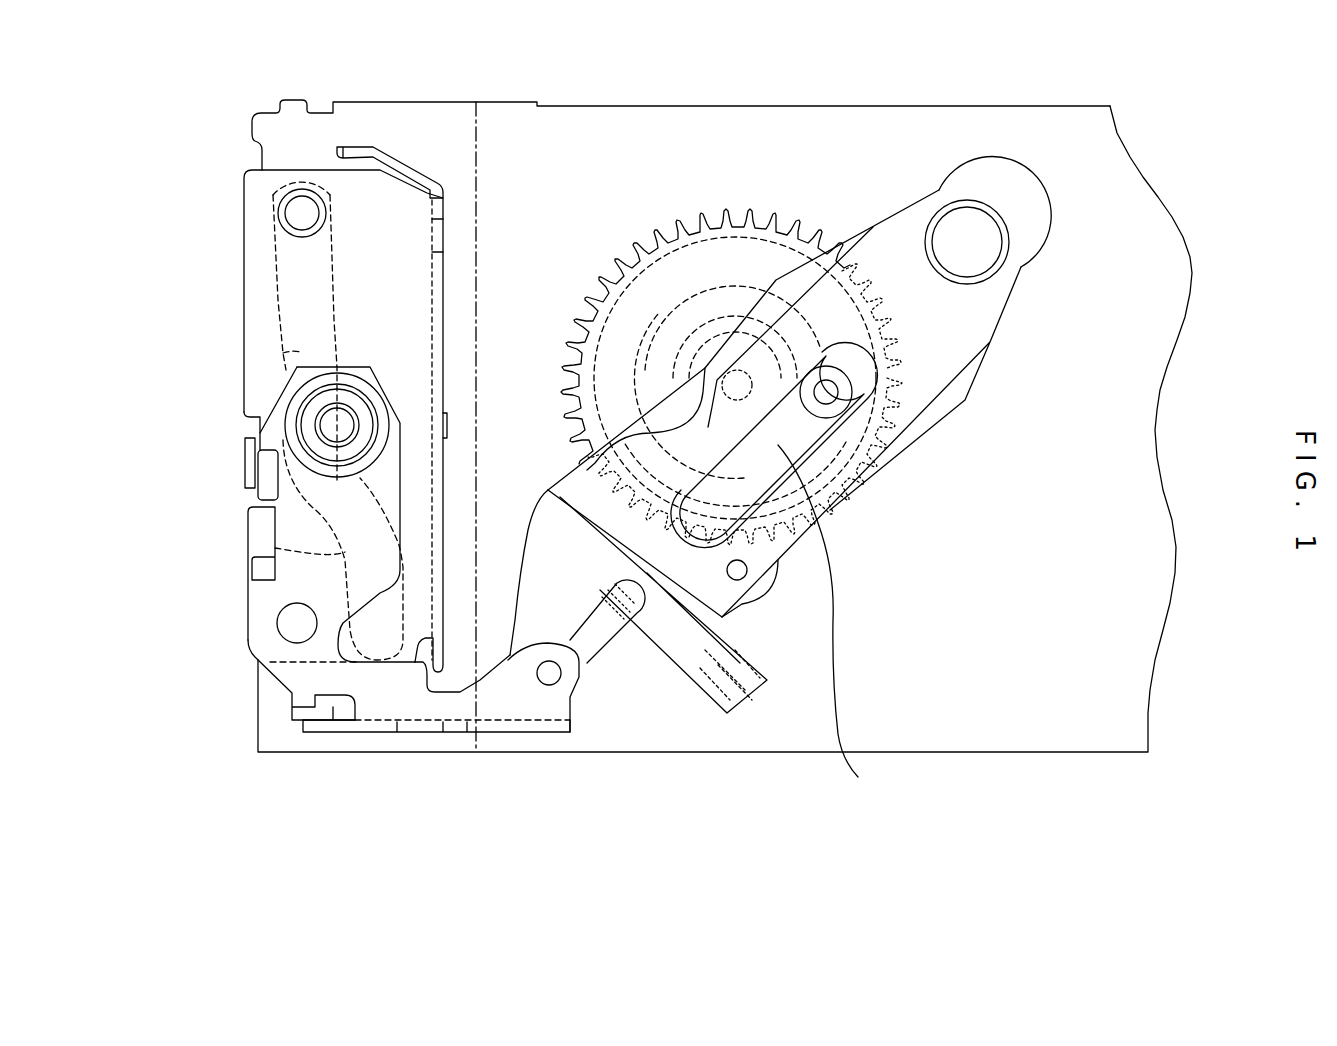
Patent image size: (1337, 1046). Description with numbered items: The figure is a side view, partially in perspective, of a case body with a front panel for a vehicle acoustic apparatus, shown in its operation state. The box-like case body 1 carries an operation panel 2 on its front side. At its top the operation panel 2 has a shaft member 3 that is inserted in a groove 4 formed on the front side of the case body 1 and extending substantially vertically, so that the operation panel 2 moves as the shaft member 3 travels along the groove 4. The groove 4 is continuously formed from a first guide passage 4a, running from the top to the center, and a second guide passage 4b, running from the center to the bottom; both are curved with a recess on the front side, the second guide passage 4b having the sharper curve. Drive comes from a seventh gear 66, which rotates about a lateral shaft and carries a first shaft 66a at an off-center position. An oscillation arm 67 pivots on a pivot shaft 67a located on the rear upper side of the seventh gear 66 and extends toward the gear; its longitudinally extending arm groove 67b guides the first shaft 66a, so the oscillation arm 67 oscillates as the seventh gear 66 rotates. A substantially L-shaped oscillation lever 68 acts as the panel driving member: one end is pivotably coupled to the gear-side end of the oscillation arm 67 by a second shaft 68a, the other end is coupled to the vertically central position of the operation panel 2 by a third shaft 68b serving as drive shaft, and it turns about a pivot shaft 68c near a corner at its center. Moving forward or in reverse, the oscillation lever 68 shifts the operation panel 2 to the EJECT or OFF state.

The case body 1 is at (476, 157).
The operation panel 2 is at (244, 258).
The shaft member 3 is at (290, 213).
The groove 4 is at (280, 310).
The first guide passage 4a is at (283, 353).
The second guide passage 4b is at (275, 548).
The seventh gear 66 is at (727, 215).
The first shaft 66a is at (828, 385).
The oscillation arm 67 is at (1002, 191).
The pivot shaft 67a is at (987, 245).
The arm groove 67b is at (833, 630).
The oscillation lever 68 is at (422, 707).
The second shaft 68a is at (545, 690).
The third shaft 68b is at (332, 425).
The pivot shaft 68c is at (288, 626).